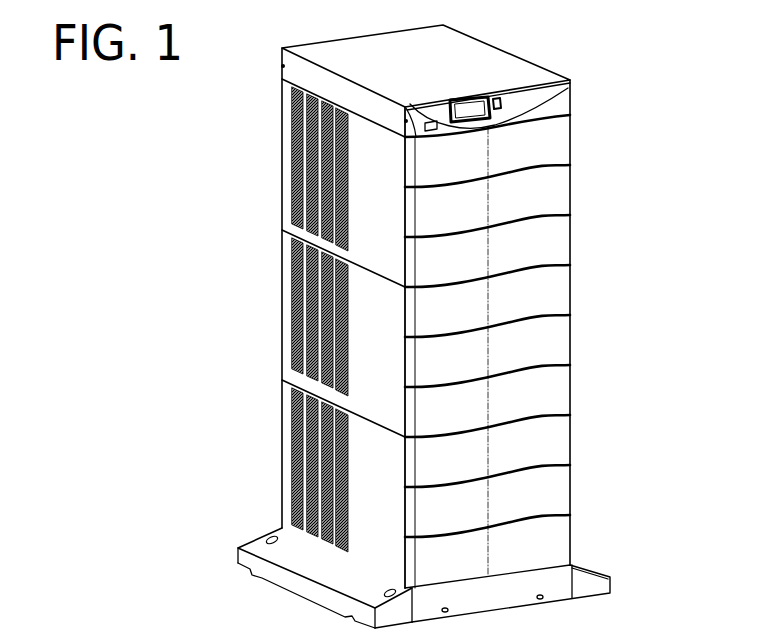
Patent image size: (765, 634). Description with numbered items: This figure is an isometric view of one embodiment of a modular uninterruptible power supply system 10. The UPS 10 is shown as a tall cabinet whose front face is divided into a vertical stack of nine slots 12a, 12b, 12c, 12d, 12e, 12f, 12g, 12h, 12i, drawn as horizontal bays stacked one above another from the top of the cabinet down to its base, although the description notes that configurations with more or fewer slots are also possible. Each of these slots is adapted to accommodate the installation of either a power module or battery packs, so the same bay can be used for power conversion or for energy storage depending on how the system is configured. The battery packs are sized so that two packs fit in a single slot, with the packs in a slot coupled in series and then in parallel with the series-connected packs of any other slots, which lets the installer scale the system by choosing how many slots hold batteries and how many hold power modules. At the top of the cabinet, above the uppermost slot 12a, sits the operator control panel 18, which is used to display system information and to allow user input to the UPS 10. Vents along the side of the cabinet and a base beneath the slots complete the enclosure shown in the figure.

The uninterruptible power supply system 10 is at (168, 269).
The slot 12a is at (571, 141).
The slot 12b is at (571, 191).
The slot 12c is at (571, 241).
The slot 12d is at (571, 291).
The slot 12e is at (571, 341).
The slot 12f is at (571, 391).
The slot 12g is at (571, 441).
The slot 12h is at (571, 491).
The slot 12i is at (571, 541).
The operator control panel 18 is at (523, 67).